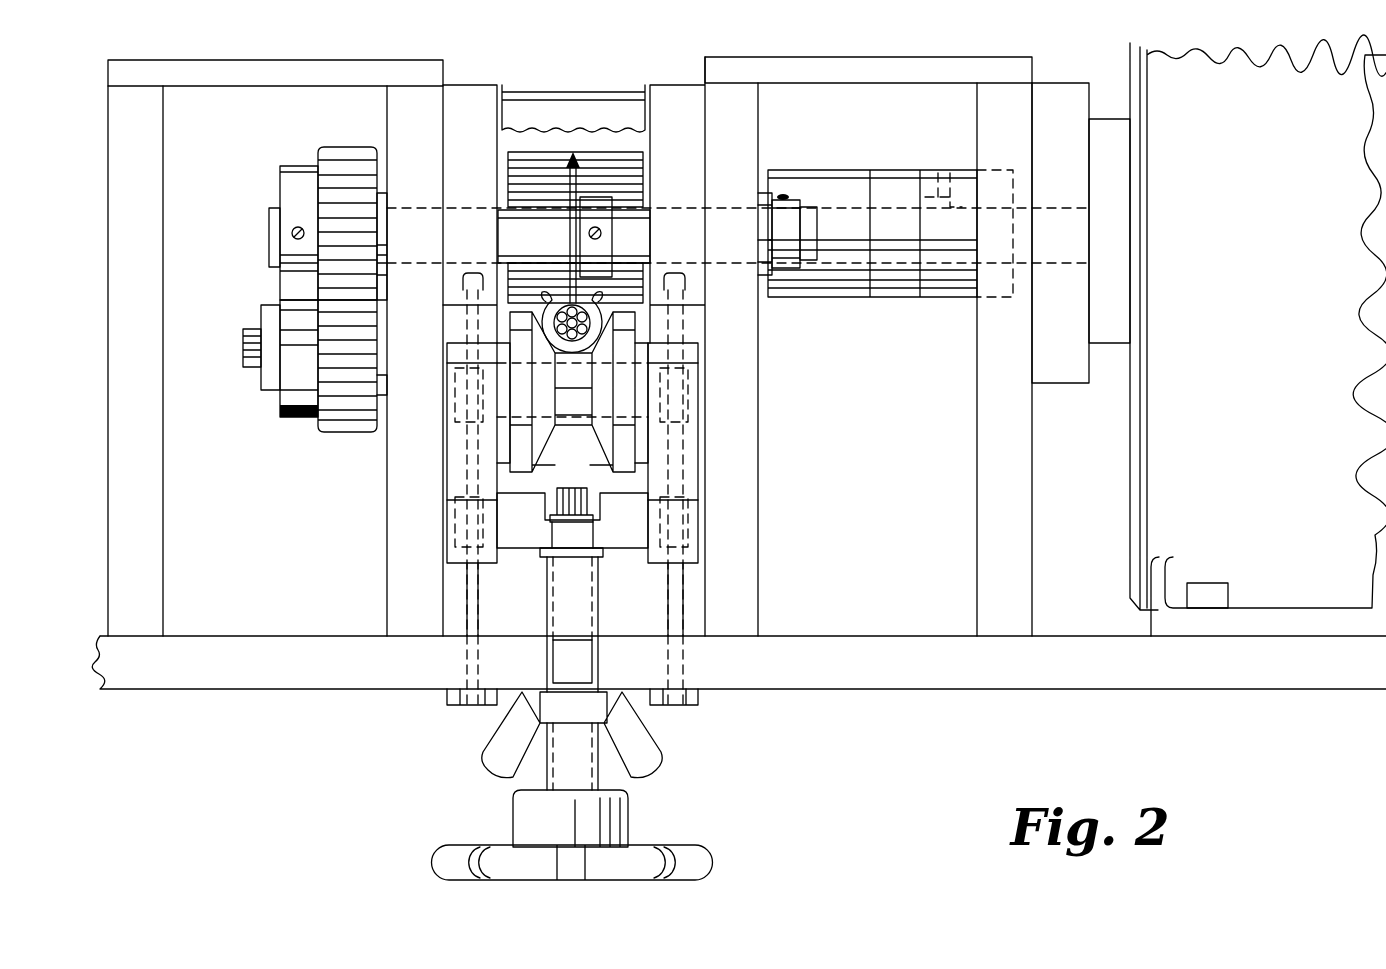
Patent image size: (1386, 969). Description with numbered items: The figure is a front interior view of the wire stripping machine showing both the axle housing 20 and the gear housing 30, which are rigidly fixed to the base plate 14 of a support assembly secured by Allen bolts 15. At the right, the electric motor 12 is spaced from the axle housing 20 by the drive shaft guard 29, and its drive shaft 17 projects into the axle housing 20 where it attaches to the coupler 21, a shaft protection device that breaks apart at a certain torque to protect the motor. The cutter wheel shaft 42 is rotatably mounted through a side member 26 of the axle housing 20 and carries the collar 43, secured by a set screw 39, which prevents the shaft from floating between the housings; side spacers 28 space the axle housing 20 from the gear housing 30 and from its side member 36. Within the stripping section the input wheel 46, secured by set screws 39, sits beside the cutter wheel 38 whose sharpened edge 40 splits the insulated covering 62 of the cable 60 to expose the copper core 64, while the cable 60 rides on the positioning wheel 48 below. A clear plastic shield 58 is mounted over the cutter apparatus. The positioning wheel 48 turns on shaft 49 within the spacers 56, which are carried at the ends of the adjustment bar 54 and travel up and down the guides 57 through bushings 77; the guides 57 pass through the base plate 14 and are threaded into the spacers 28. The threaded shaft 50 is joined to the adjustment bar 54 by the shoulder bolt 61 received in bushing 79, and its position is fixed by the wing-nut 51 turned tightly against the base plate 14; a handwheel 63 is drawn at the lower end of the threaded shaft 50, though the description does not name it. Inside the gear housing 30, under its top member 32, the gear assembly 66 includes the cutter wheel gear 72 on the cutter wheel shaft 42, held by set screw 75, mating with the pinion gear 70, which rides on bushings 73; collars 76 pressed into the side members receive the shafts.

The electric motor 12 is at (1258, 335).
The base plate 14 is at (240, 690).
The Allen bolts 15 is at (1233, 600).
The drive shaft 17 is at (1080, 372).
The axle housing 20 is at (868, 325).
The coupler 21 is at (860, 297).
The side members 26 is at (758, 528).
The side spacers 28 is at (474, 85).
The drive shaft guard 29 is at (1053, 83).
The gear housing 30 is at (275, 329).
The top member 32 is at (273, 59).
The side members 36 is at (163, 483).
The cutter wheel 38 is at (558, 178).
The set screws 39 is at (596, 226).
The sharpened edge 40 is at (575, 165).
The cutter wheel shaft 42 is at (432, 207).
The collar 43 is at (815, 290).
The input wheel 46 is at (621, 152).
The positioning wheel 48 is at (455, 470).
The shaft 49 is at (641, 375).
The threaded shaft 50 is at (600, 598).
The wing-nut 51 is at (658, 745).
The adjustment bar 54 is at (505, 565).
The spacers 56 is at (466, 628).
The guides 57 is at (465, 585).
The plastic shield 58 is at (532, 85).
The cable 60 is at (596, 292).
The shoulder bolt 61 is at (600, 490).
The insulated covering 62 is at (608, 296).
The handwheel 63 is at (548, 666).
The copper core 64 is at (612, 236).
The gear assembly 66 is at (300, 423).
The pinion gear 70 is at (323, 435).
The cutter wheel gear 72 is at (333, 147).
The bushings 73 is at (268, 390).
The set screws 75 is at (293, 237).
The collar 76 is at (382, 193).
The bushings 77 is at (460, 445).
The bushing 79 is at (604, 550).